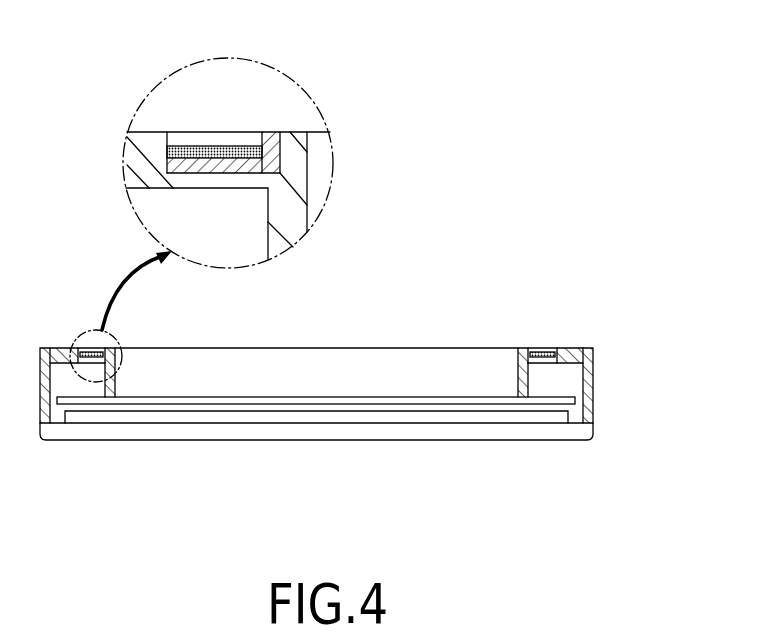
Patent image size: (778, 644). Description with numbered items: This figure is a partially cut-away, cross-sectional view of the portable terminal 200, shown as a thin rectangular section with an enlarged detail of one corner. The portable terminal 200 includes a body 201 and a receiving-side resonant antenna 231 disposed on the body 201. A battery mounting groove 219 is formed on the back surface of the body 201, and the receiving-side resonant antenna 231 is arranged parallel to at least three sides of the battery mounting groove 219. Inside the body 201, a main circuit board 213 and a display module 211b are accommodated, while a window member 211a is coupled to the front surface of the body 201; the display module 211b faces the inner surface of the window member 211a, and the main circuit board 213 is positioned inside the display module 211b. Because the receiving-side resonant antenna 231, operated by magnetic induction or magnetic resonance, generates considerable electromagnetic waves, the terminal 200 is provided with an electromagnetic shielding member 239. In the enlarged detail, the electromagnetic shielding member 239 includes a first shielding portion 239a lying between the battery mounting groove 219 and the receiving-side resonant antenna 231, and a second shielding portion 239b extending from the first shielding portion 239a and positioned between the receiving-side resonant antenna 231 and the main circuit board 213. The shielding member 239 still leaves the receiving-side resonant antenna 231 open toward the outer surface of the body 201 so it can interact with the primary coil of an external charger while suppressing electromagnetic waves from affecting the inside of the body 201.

The portable terminal 200 is at (567, 192).
The body 201 is at (135, 171).
The battery mounting groove 219 is at (323, 158).
The electromagnetic shielding member 239 is at (245, 194).
The first shielding portion 239a is at (270, 145).
The second shielding portion 239b is at (165, 163).
The receiving-side resonant antenna 231 is at (192, 150).
The main circuit board 213 is at (145, 404).
The display module 211b is at (343, 415).
The window member 211a is at (570, 432).